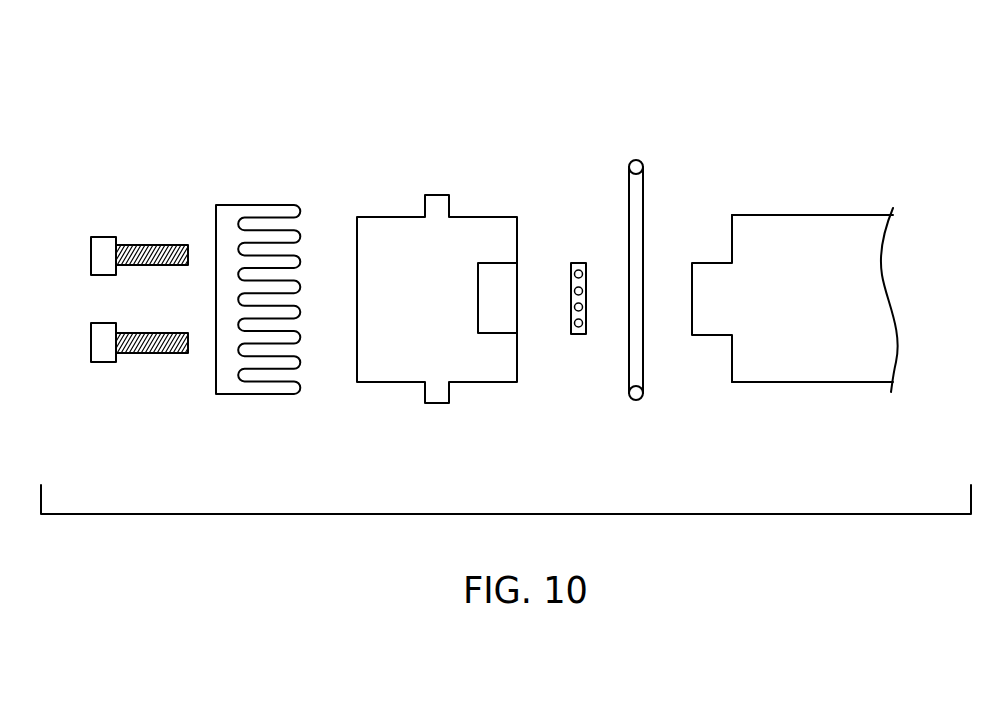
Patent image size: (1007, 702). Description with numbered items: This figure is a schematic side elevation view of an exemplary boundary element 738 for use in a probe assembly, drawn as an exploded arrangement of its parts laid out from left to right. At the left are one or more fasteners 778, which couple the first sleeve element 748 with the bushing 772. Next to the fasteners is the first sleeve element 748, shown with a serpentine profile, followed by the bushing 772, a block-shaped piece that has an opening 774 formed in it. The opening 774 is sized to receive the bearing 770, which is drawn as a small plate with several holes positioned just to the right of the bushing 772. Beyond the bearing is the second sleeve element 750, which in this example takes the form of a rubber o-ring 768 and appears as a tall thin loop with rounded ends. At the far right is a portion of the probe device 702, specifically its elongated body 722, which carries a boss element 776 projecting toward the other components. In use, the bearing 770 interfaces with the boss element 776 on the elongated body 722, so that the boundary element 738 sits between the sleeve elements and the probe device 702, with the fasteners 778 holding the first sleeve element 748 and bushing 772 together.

The boundary element 738 is at (825, 77).
The probe device 702 is at (835, 284).
The elongated body 722 is at (847, 368).
The boss element 776 is at (707, 354).
The second sleeve element 750 is at (657, 277).
The rubber o-ring 768 is at (632, 399).
The bearing 770 is at (577, 336).
The bushing 772 is at (389, 214).
The opening 774 is at (519, 248).
The first sleeve element 748 is at (259, 186).
The fasteners 778 is at (115, 208).